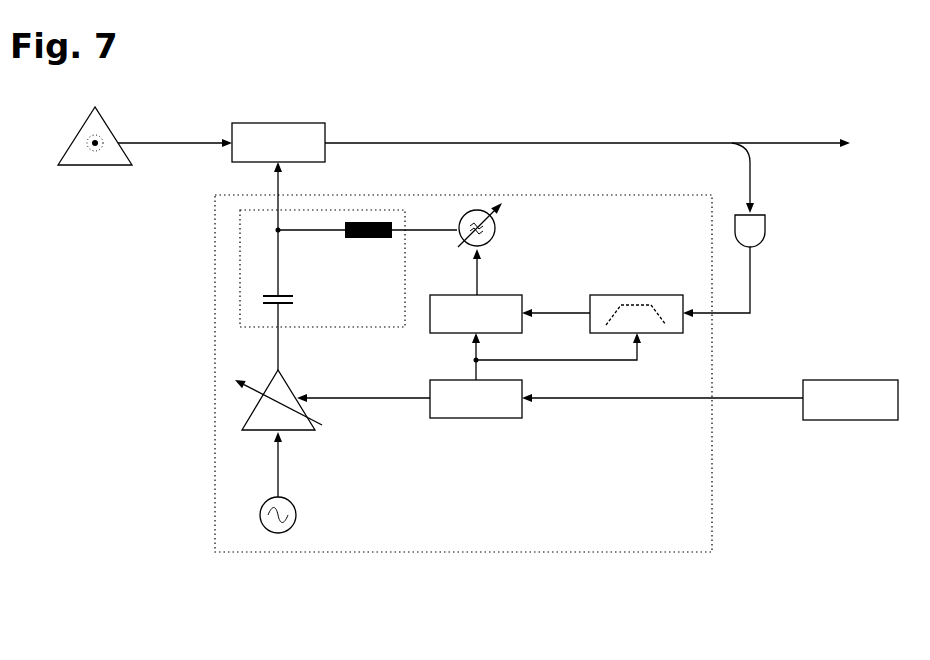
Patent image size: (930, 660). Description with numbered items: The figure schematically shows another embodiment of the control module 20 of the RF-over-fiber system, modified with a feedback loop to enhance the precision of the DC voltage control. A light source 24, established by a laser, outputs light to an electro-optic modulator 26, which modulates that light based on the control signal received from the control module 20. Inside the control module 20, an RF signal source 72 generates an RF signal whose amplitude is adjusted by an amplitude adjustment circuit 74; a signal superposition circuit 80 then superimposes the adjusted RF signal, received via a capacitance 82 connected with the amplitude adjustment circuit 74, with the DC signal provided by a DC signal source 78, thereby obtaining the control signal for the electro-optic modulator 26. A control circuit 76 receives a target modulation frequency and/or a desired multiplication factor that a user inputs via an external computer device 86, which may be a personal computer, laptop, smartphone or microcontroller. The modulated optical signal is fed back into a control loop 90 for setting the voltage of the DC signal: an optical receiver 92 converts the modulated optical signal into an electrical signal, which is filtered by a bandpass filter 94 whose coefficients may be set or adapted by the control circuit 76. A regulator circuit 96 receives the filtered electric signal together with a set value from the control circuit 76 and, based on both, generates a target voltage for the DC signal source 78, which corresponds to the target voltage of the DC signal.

The control module 20 is at (372, 555).
The light source 24 is at (80, 167).
The electro-optic modulator 26 is at (280, 123).
The RF signal source 72 is at (260, 517).
The amplitude adjustment circuit 74 is at (252, 413).
The control circuit 76 is at (476, 418).
The DC signal source 78 is at (476, 209).
The signal superposition circuit 80 is at (238, 242).
The capacitance 82 is at (260, 305).
The external computer device 86 is at (857, 420).
The control loop 90 is at (735, 332).
The optical receiver 92 is at (766, 230).
The bandpass filter 94 is at (673, 333).
The regulator circuit 96 is at (513, 295).